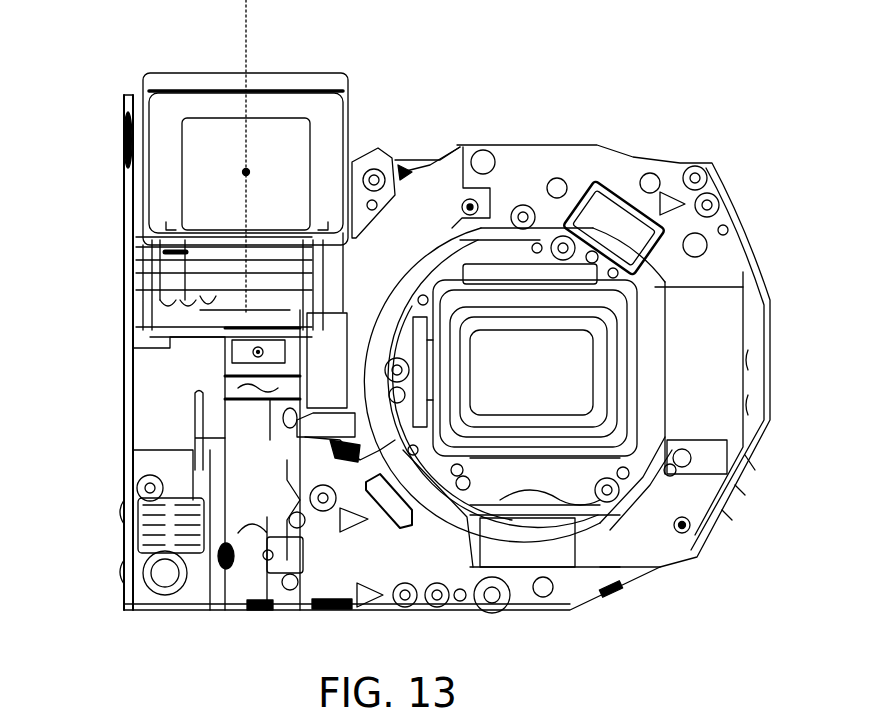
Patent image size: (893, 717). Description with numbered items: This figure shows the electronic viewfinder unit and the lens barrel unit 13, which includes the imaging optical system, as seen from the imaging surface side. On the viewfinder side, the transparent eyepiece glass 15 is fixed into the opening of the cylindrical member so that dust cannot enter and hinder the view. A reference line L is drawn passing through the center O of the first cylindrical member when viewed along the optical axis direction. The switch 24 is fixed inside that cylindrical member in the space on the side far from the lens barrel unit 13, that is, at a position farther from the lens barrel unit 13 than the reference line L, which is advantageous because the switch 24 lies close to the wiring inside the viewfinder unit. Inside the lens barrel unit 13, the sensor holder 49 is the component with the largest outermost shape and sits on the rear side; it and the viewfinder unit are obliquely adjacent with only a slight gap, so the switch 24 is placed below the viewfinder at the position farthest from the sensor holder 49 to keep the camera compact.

The lens barrel unit 13 is at (674, 160).
The eyepiece glass 15 is at (297, 143).
The switch 24 is at (188, 255).
The sensor holder 49 is at (416, 196).
The reference line L is at (248, 62).
The center O is at (227, 182).